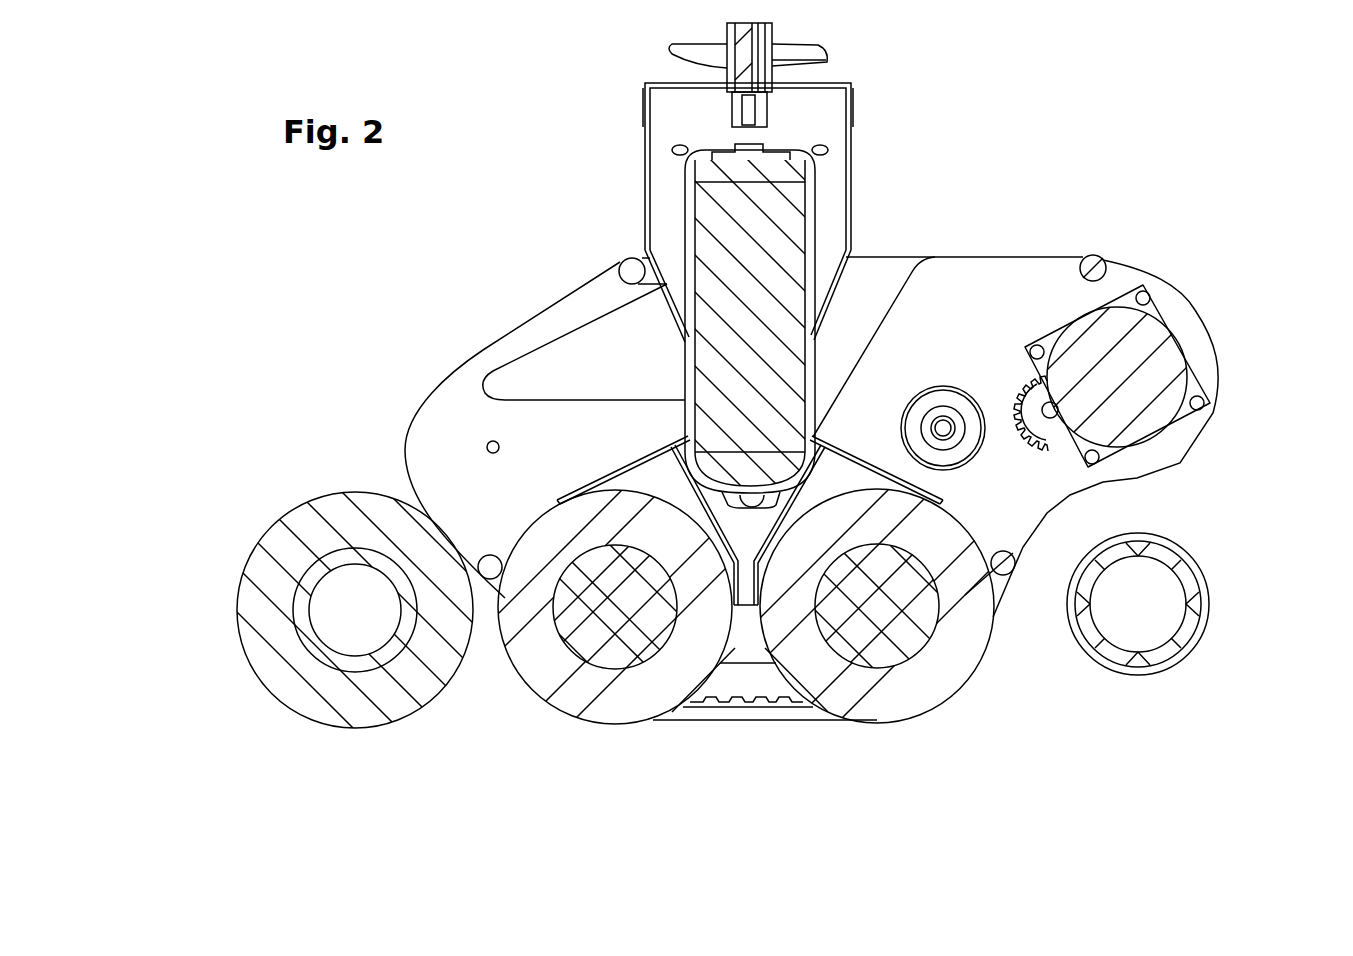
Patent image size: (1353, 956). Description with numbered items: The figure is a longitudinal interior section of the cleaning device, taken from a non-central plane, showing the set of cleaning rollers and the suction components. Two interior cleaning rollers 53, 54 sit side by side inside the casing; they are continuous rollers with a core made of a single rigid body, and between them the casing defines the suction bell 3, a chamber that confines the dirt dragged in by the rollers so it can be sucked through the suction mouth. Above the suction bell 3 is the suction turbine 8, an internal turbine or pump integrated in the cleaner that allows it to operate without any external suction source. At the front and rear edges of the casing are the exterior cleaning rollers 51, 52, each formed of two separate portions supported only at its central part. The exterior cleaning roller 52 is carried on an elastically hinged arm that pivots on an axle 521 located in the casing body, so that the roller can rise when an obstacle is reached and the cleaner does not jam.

The suction turbine 8 is at (760, 267).
The axle 521 is at (489, 444).
The exterior cleaning roller 52 is at (312, 707).
The interior cleaning roller 54 is at (575, 703).
The interior cleaning roller 53 is at (918, 692).
The exterior cleaning roller 51 is at (1193, 618).
The suction bell 3 is at (748, 535).